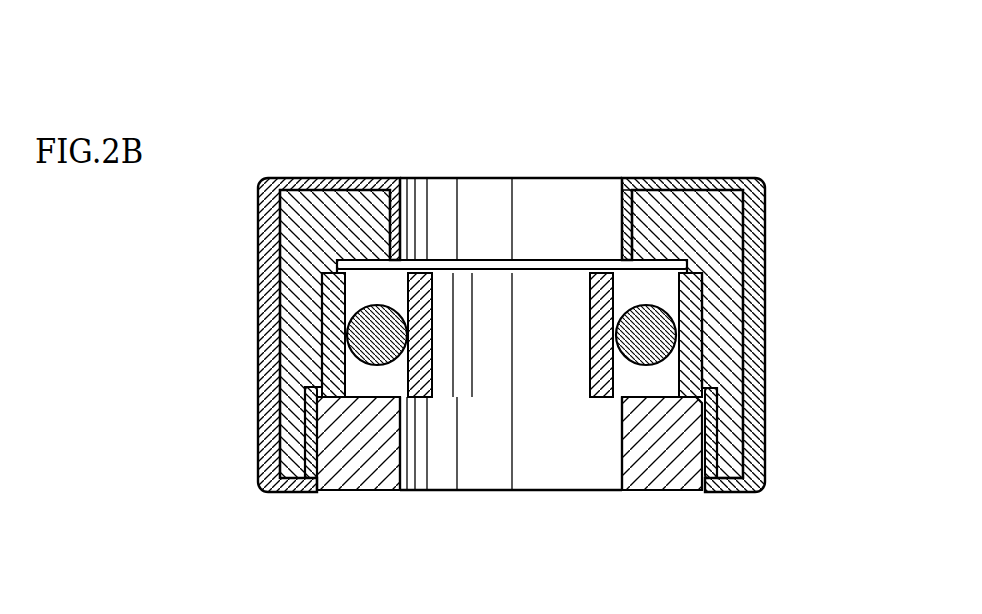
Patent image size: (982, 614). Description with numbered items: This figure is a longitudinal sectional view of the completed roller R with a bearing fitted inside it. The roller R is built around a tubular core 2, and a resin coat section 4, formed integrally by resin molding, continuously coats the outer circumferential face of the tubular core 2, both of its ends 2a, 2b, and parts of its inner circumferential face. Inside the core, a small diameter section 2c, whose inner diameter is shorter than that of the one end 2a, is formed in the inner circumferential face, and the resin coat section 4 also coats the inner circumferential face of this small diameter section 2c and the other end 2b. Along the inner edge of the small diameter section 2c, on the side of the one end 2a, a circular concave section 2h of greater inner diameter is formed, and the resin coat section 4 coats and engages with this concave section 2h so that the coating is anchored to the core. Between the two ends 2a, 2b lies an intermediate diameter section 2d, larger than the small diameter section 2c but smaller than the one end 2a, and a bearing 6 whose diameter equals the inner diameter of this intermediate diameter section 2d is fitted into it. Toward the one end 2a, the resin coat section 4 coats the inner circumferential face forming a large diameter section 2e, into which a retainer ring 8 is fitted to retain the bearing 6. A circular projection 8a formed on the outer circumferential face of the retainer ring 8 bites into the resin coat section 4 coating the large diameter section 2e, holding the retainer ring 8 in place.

The roller R is at (330, 107).
The tubular core 2 is at (310, 231).
The one end of the tubular core 2a is at (722, 491).
The other end of the tubular core 2b is at (690, 178).
The small diameter section 2c is at (619, 222).
The intermediate diameter section 2d is at (690, 360).
The large diameter section 2e is at (703, 417).
The concave section 2h is at (640, 258).
The resin coat section 4 is at (268, 297).
The bearing 6 is at (330, 347).
The retainer ring 8 is at (356, 460).
The circular projection 8a is at (305, 441).